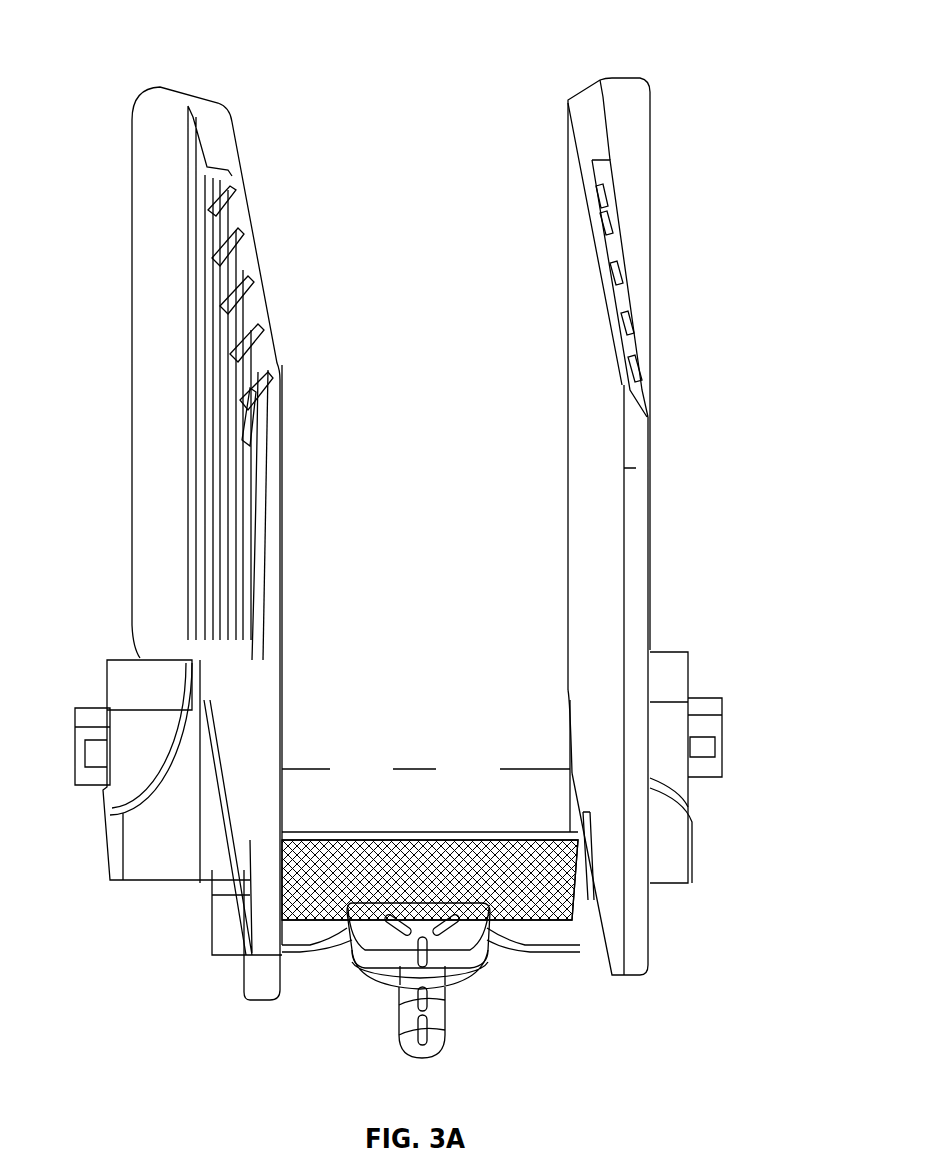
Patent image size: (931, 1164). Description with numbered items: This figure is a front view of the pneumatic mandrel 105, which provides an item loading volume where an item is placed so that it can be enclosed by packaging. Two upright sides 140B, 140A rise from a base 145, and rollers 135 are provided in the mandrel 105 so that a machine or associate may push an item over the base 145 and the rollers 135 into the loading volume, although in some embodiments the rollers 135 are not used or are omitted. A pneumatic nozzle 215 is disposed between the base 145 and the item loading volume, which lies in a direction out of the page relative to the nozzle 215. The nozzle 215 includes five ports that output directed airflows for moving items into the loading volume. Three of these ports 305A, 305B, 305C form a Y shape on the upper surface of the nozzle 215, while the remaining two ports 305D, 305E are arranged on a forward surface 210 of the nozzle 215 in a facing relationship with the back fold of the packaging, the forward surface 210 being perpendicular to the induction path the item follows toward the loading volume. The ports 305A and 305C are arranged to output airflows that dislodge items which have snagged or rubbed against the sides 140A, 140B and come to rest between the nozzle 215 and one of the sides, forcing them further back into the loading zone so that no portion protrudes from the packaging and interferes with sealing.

The pneumatic mandrel 105 is at (681, 38).
The side 140B is at (178, 88).
The side 140A is at (585, 98).
The base 145 is at (312, 769).
The rollers 135 is at (511, 838).
The pneumatic nozzle 215 is at (473, 982).
The forward surface 210 is at (437, 1023).
The port 305A is at (392, 917).
The port 305B is at (421, 937).
The port 305C is at (447, 917).
The port 305D is at (417, 993).
The port 305E is at (417, 1036).